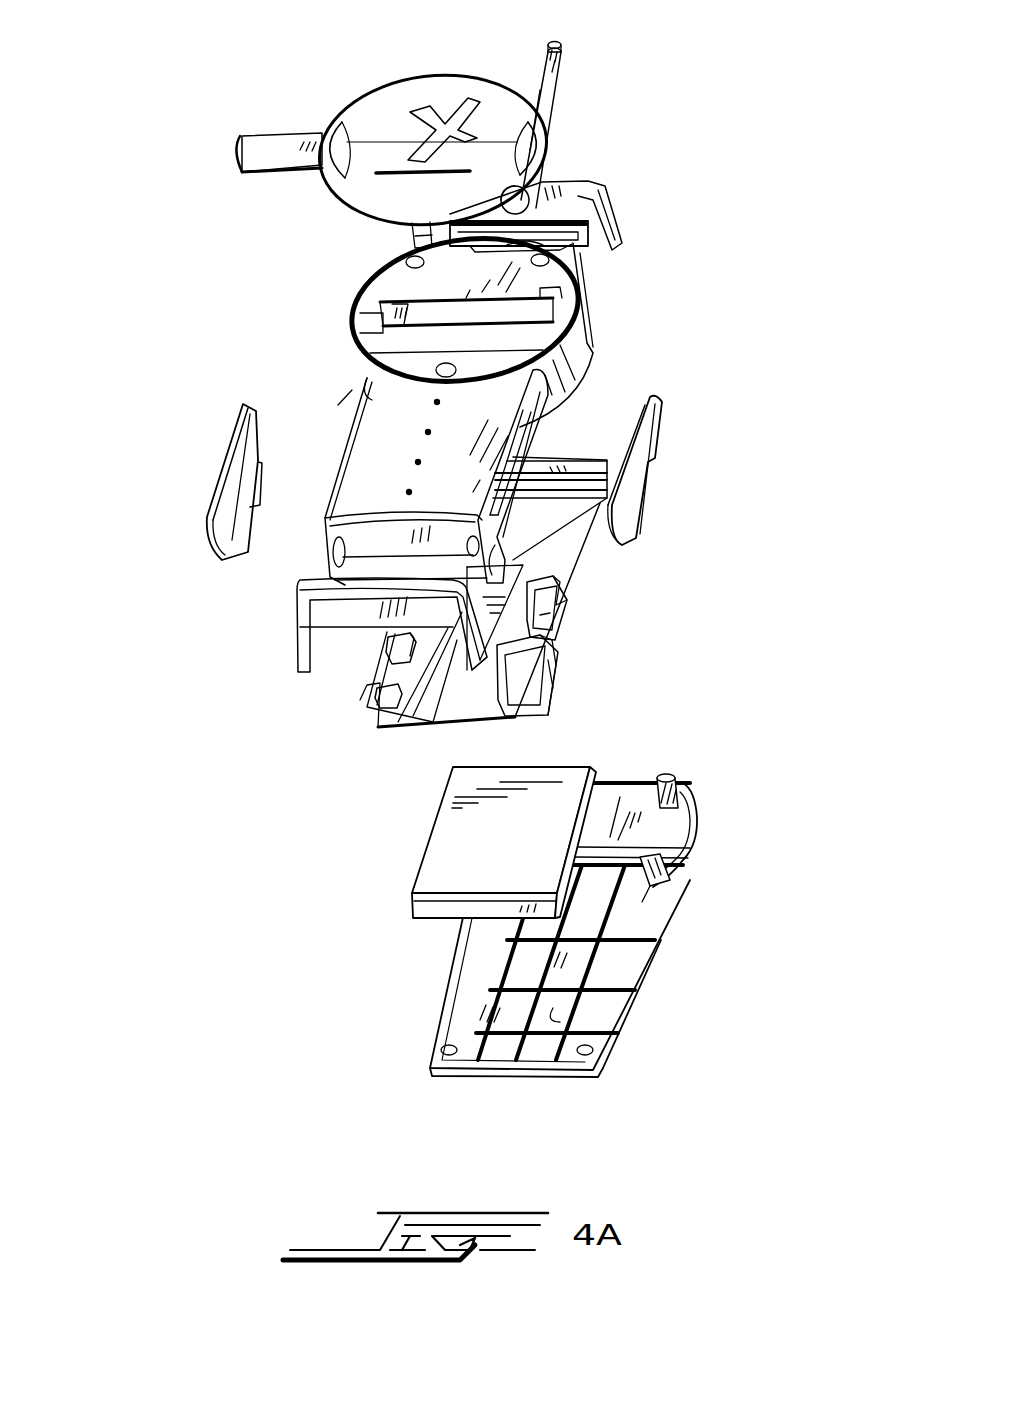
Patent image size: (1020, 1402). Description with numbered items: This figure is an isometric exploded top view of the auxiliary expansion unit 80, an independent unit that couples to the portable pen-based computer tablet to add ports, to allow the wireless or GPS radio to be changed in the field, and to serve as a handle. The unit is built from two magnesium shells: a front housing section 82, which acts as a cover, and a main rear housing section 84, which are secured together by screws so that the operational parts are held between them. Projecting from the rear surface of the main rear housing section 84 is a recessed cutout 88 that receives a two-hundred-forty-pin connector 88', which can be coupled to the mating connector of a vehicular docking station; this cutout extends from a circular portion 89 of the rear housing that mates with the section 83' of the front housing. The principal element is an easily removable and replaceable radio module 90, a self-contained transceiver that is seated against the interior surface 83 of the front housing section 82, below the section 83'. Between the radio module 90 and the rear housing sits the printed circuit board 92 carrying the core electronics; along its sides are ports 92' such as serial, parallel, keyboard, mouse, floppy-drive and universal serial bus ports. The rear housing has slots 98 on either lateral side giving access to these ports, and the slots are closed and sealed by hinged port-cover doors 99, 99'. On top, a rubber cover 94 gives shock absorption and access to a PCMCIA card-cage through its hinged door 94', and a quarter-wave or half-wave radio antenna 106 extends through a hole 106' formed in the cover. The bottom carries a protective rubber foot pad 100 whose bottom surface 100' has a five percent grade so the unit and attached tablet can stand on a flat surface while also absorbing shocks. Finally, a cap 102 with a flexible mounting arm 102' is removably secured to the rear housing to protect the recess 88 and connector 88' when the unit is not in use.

The auxiliary expansion unit 80 is at (228, 240).
The front housing section 82 is at (642, 972).
The interior surface of front housing section 83 is at (630, 1013).
The section of front housing 83' is at (720, 814).
The main rear housing section 84 is at (365, 462).
The recessed cutout 88 is at (510, 310).
The 240-pin connector 88' is at (542, 315).
The circular portion 89 is at (582, 360).
The radio module 90 is at (445, 835).
The printed circuit board 92 is at (468, 621).
The ports 92' is at (587, 646).
The top rubber cover 94 is at (578, 215).
The hinged door 94' is at (592, 245).
The slots 98 is at (523, 434).
The hinged port-cover door 99 is at (194, 482).
The hinged port-cover door 99' is at (675, 470).
The bottom protective rubber foot pad 100 is at (352, 647).
The bottom surface of foot pad 100' is at (346, 678).
The cap 102 is at (433, 132).
The flexible mounting arm 102' is at (273, 113).
The radio antenna 106 is at (580, 125).
The hole 106' is at (584, 165).